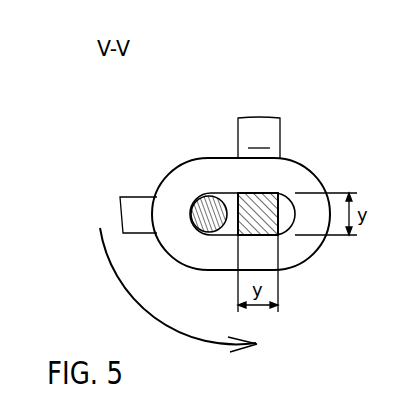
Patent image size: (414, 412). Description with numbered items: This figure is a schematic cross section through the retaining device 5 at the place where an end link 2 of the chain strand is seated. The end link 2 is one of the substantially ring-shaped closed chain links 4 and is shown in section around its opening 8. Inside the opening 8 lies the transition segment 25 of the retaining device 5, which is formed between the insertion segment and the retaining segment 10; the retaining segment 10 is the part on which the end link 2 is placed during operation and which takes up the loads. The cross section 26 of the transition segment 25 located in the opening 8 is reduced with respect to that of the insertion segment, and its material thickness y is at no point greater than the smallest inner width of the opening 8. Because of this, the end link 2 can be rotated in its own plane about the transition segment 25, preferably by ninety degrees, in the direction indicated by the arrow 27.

The end link 2 is at (300, 178).
The chain links 4 is at (140, 207).
The retaining device 5 is at (298, 114).
The opening 8 is at (228, 200).
The retaining segment 10 is at (259, 137).
The transition segment 25 is at (260, 237).
The cross section 26 is at (258, 214).
The arrow 27 is at (129, 297).